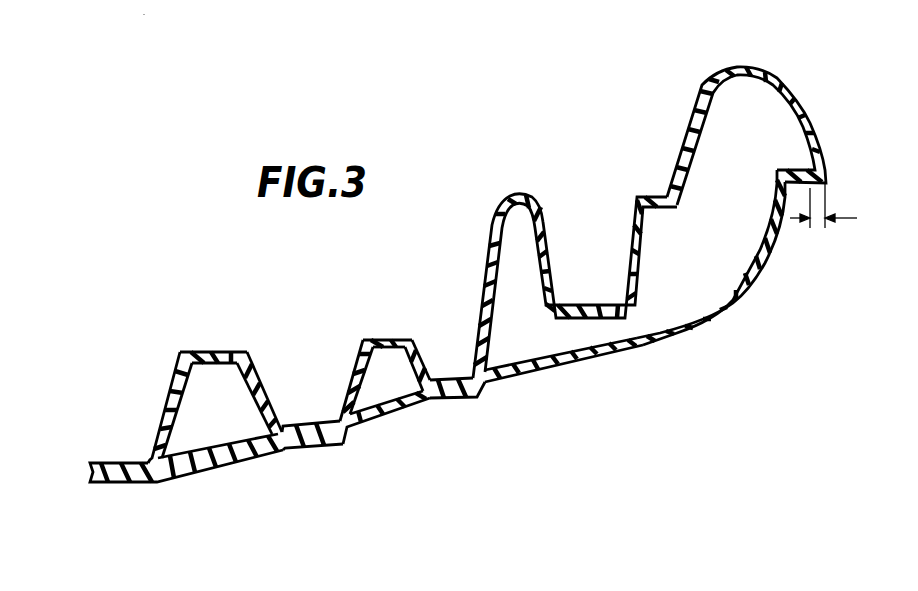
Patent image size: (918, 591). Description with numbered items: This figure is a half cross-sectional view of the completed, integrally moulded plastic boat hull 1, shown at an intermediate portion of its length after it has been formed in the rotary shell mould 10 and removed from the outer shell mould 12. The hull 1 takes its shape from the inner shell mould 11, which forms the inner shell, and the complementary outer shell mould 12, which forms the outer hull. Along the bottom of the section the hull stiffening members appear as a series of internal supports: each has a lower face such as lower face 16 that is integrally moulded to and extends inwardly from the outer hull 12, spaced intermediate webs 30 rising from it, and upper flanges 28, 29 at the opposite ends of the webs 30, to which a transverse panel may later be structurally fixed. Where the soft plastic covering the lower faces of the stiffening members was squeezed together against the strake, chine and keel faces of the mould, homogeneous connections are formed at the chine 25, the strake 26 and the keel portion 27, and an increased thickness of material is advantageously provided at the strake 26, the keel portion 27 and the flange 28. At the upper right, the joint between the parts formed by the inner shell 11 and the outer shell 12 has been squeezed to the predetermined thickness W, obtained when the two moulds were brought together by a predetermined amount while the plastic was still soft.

The boat hull 1 is at (590, 76).
The rotary shell mould 10 is at (766, 40).
The inner shell mould 11 is at (700, 100).
The outer shell mould 12 is at (745, 290).
The lower face 16 is at (148, 9).
The chine 25 is at (470, 399).
The strake 26 is at (310, 446).
The keel portion 27 is at (122, 483).
The upper flange 28 is at (383, 340).
The upper flange 29 is at (218, 352).
The intermediate web 30 is at (167, 400).
The predetermined thickness W is at (822, 220).